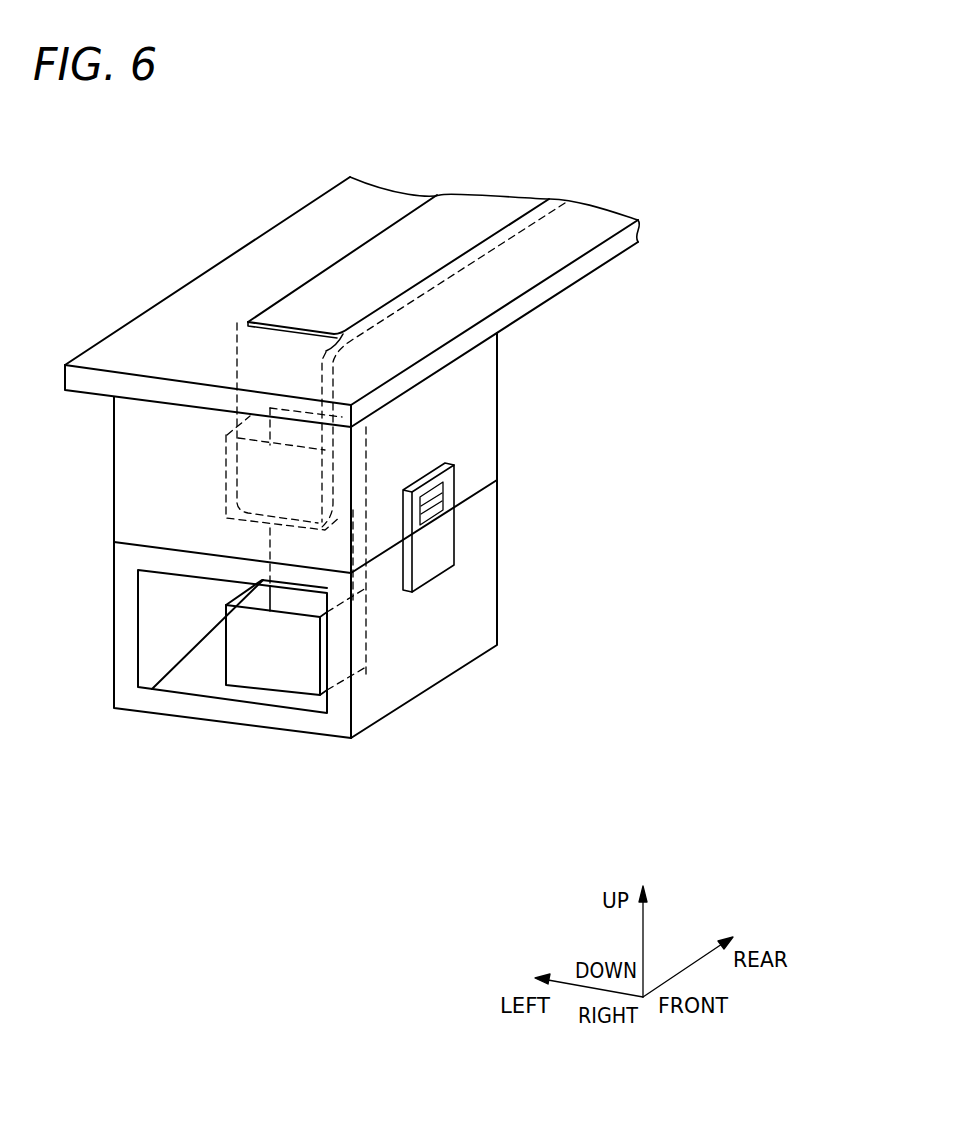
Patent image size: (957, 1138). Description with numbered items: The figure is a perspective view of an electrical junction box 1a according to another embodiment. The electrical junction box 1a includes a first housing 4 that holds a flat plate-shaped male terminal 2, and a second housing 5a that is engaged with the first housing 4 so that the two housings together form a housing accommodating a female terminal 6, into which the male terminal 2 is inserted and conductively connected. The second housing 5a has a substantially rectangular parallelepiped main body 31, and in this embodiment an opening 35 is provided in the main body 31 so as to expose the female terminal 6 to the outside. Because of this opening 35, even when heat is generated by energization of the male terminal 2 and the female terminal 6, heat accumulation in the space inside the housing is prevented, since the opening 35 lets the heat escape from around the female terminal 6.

The electrical junction box 1a is at (168, 224).
The male terminal 2 is at (359, 283).
The first housing 4 is at (498, 428).
The second housing 5a is at (498, 537).
The female terminal 6 is at (226, 482).
The main body 31 is at (425, 648).
The opening 35 is at (138, 620).